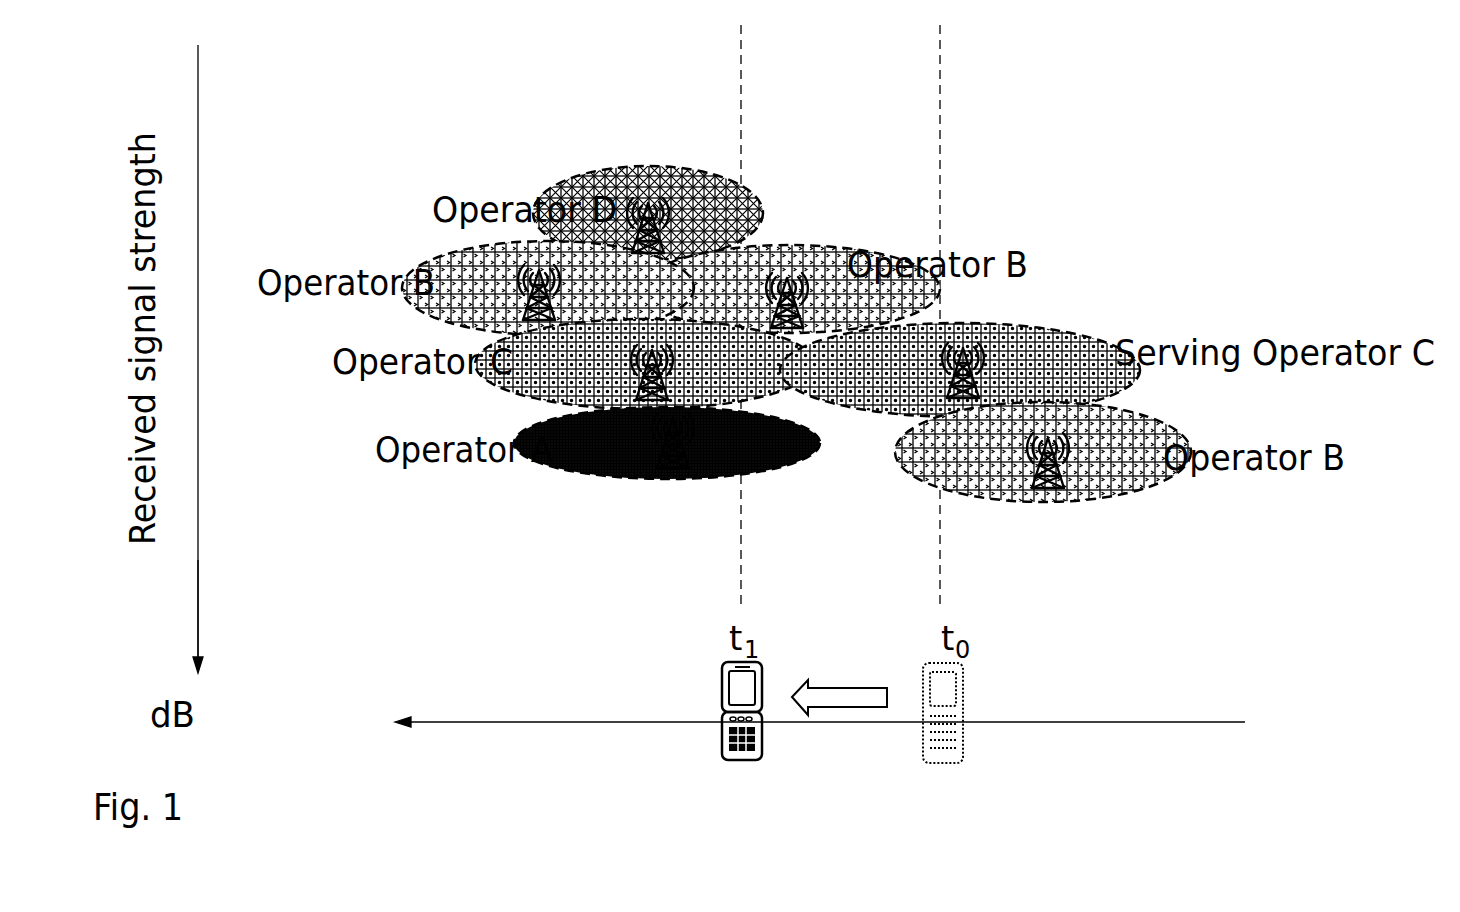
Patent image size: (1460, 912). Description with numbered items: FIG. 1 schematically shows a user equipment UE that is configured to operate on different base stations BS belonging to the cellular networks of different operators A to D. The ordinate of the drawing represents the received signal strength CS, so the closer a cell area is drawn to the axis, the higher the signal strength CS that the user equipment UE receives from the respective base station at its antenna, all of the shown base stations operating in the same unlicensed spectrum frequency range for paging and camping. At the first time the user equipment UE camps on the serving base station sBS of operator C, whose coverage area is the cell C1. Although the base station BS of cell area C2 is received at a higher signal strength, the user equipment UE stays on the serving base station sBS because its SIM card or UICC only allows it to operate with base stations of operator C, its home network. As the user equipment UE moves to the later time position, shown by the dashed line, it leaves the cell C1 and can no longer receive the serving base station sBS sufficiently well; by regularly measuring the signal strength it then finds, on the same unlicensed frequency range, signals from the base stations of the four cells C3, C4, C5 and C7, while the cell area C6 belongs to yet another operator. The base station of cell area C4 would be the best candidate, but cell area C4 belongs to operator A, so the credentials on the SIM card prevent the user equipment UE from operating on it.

The base station BS is at (645, 190).
The serving base station sBS is at (990, 352).
The cell C1 is at (1082, 363).
The cell area C2 is at (1113, 470).
The cell area C3 is at (830, 253).
The cell area C4 is at (623, 447).
The cell area C5 is at (535, 348).
The cell area C6 is at (447, 270).
The cell area C7 is at (725, 203).
The user equipment UE is at (915, 735).
The received signal strength CS is at (175, 590).